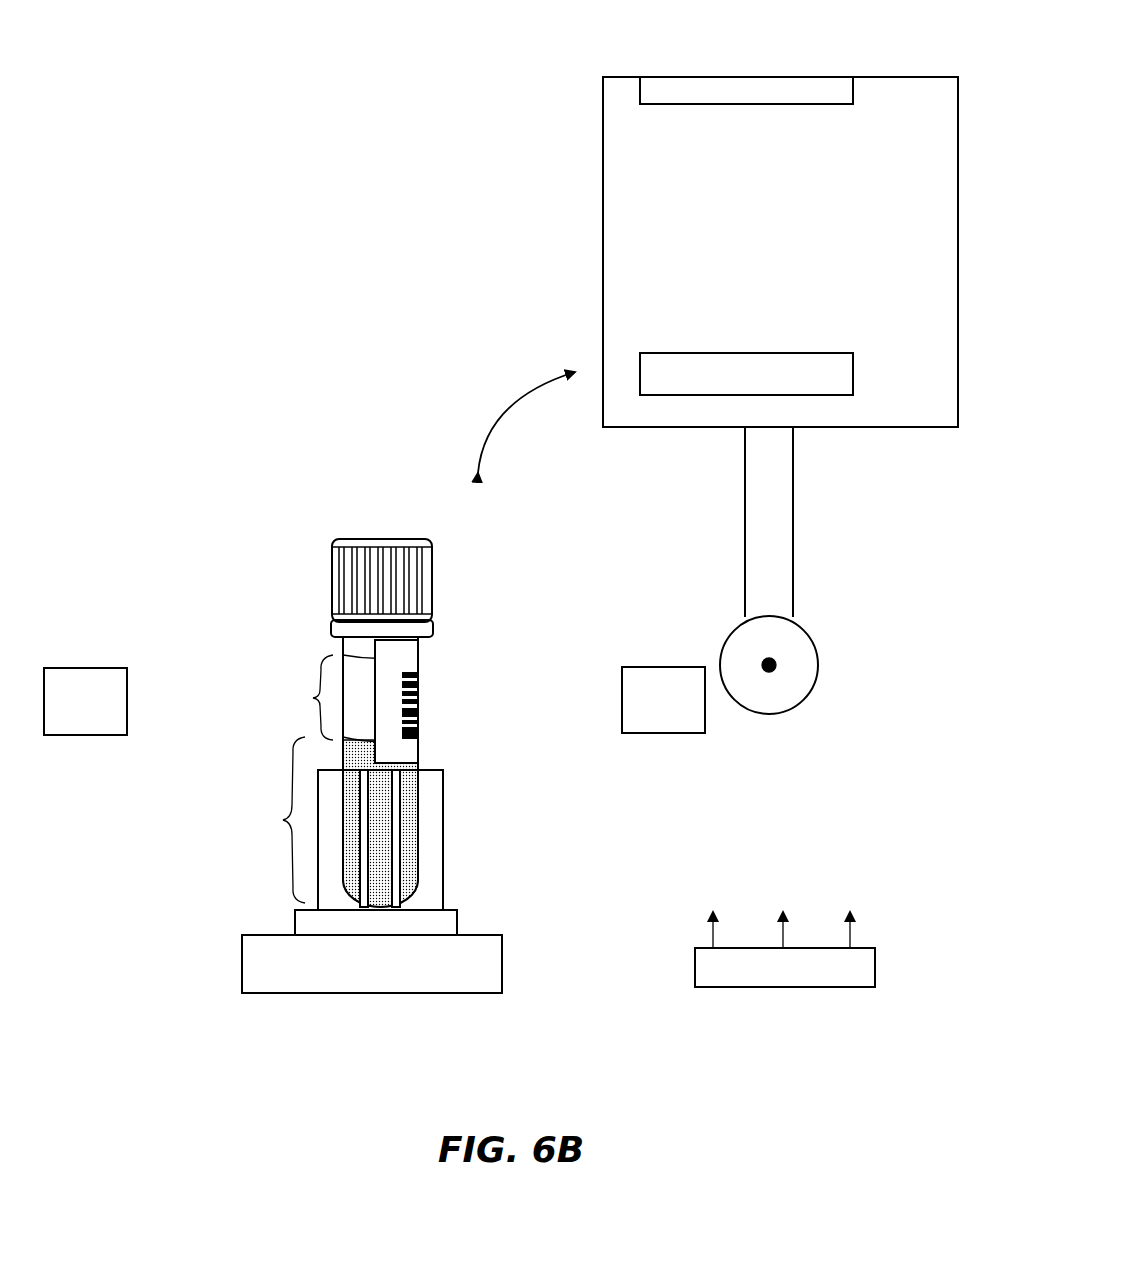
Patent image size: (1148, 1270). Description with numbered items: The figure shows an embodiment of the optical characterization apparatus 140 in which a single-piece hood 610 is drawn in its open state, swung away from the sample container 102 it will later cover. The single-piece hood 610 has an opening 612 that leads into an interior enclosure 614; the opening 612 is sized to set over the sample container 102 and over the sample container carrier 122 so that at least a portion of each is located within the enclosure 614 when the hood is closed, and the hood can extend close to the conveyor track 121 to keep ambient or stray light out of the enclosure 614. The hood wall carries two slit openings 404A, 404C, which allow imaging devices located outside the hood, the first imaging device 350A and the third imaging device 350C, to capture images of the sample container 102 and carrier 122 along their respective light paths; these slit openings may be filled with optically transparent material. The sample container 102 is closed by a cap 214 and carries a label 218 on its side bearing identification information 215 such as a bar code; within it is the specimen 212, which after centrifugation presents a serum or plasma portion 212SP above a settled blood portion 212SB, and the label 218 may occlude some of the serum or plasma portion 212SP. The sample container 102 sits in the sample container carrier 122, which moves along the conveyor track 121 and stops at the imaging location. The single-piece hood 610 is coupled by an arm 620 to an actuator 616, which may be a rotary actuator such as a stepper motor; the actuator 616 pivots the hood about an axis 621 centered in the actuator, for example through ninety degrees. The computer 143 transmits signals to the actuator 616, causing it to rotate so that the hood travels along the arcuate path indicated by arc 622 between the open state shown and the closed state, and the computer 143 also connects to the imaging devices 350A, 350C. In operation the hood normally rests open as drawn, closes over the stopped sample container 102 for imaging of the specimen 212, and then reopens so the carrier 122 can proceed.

The single-piece hood 610 is at (601, 125).
The slit opening 404A is at (752, 77).
The slit opening 404C is at (758, 353).
The enclosure 614 is at (630, 242).
The opening 612 is at (601, 320).
The arc 622 is at (509, 413).
The arm 620 is at (793, 530).
The actuator 616 is at (770, 714).
The axis 621 is at (775, 658).
The third imaging device 350C is at (663, 700).
The first imaging device 350A is at (85, 701).
The optical characterization apparatus 140 is at (220, 420).
The sample container 102 is at (300, 588).
The cap 214 is at (432, 560).
The label 218 is at (418, 652).
The identification information 215 is at (420, 712).
The specimen 212 is at (278, 752).
The serum or plasma portion 212SP is at (281, 697).
The settled blood portion 212SB is at (256, 820).
The sample container carrier 122 is at (297, 920).
The conveyor track 121 is at (502, 963).
The computer 143 is at (795, 987).